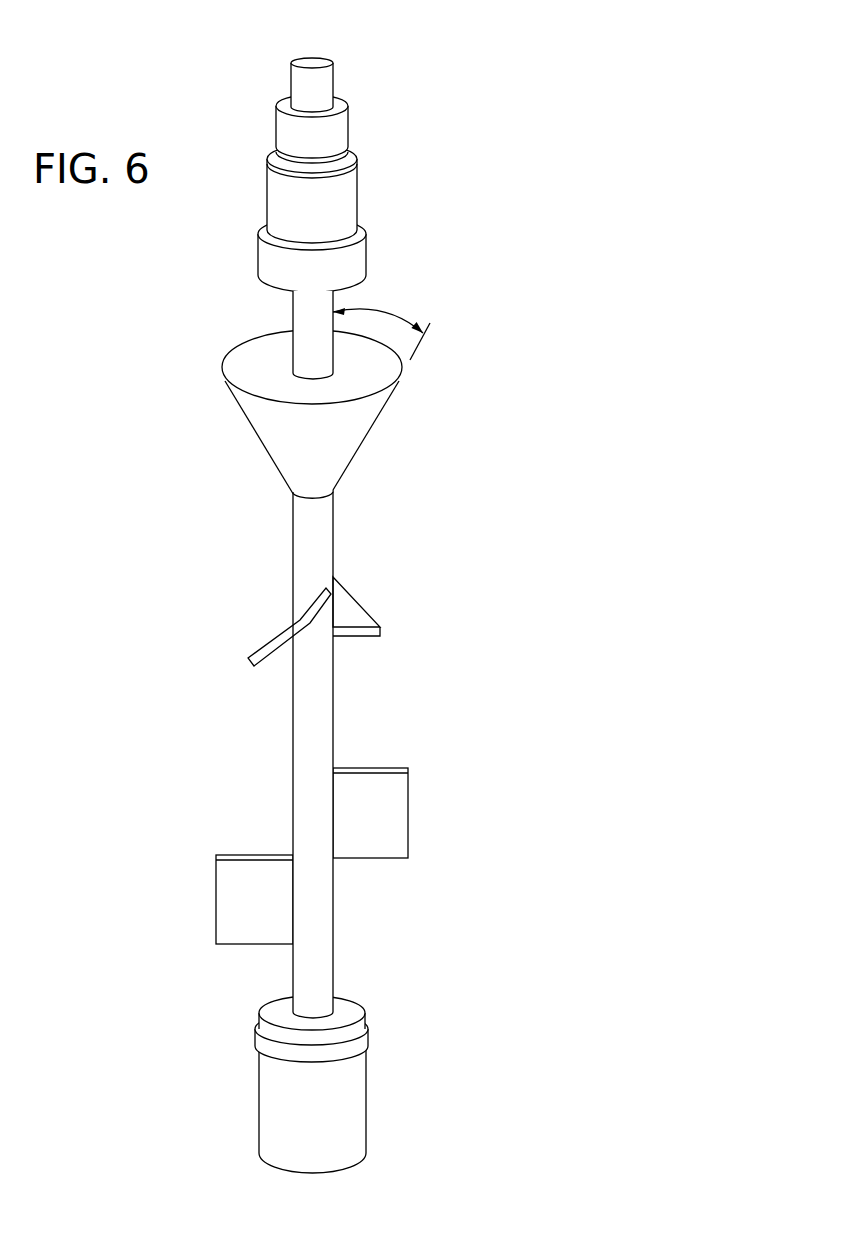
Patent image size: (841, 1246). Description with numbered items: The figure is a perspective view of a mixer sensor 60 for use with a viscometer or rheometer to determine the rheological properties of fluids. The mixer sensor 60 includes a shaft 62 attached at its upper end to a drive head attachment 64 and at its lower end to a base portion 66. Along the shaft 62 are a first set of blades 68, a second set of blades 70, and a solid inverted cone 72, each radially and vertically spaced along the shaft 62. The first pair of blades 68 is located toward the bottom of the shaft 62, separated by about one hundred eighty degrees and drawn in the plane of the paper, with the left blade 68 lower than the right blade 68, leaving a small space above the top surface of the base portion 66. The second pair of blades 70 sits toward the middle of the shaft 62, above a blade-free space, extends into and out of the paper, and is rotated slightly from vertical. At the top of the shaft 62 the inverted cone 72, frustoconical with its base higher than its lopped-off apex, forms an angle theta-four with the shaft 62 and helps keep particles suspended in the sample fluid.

The mixer sensor 60 is at (468, 252).
The shaft 62 is at (300, 313).
The drive head attachment 64 is at (252, 55).
The base portion 66 is at (343, 1083).
The first set of blades 68 is at (387, 818).
The second set of blades 70 is at (275, 630).
The inverted cone 72 is at (275, 428).